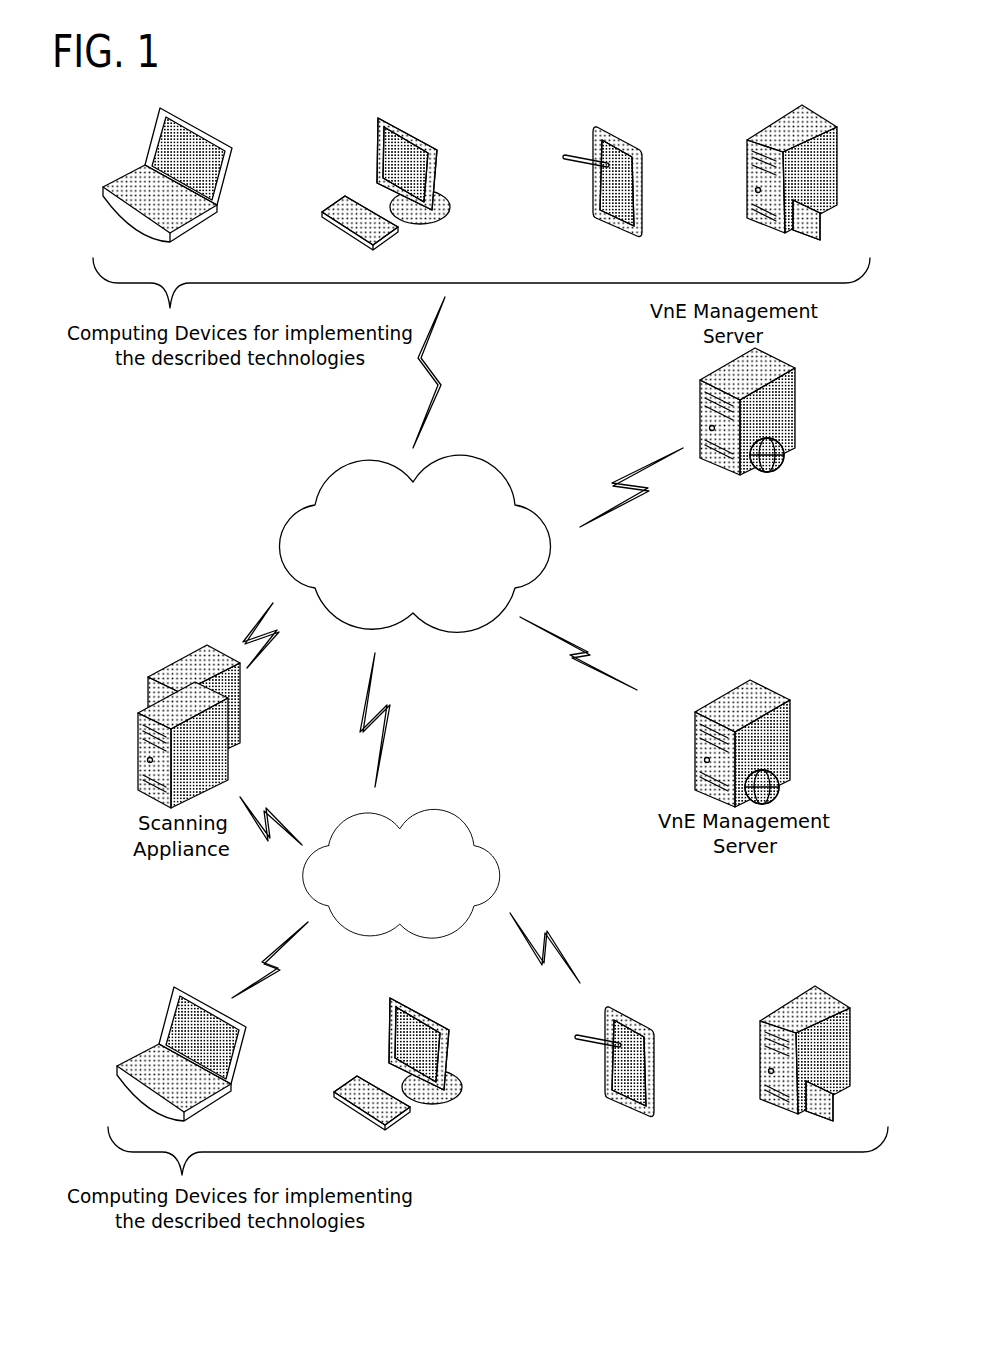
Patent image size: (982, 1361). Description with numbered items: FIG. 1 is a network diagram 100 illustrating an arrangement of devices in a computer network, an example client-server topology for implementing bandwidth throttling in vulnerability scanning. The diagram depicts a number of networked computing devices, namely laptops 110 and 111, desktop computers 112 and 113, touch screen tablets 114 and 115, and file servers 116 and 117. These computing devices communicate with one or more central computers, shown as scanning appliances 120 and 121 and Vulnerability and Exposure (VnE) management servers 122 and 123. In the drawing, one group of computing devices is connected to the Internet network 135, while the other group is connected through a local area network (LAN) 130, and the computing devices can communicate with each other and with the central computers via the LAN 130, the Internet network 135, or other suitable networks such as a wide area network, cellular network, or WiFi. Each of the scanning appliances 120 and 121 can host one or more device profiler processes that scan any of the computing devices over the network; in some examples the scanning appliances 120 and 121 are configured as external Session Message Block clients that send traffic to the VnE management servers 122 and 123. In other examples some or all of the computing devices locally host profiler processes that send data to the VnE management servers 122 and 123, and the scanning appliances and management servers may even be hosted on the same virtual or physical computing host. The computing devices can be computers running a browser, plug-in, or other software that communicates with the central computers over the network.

The network diagram 100 is at (841, 99).
The laptop 110 is at (152, 138).
The laptop 111 is at (162, 1030).
The desktop computer 112 is at (378, 131).
The desktop computer 113 is at (388, 1022).
The touch screen tablet 114 is at (595, 137).
The touch screen tablet 115 is at (603, 1033).
The file server 116 is at (747, 138).
The file server 117 is at (758, 1030).
The scanning appliance 120 is at (138, 745).
The scanning appliance 121 is at (170, 665).
The VnE management server 122 is at (757, 474).
The VnE management server 123 is at (755, 682).
The local area network 130 is at (401, 873).
The Internet network 135 is at (414, 543).